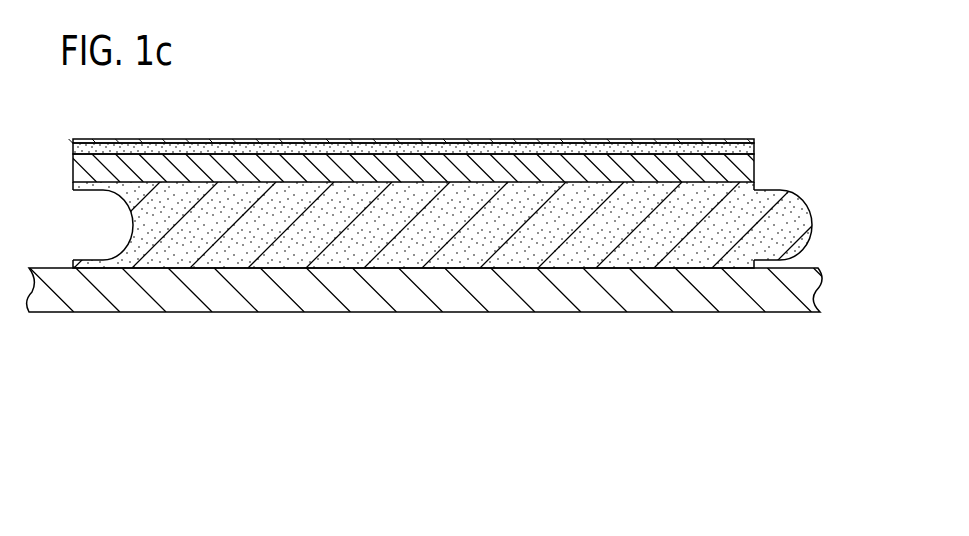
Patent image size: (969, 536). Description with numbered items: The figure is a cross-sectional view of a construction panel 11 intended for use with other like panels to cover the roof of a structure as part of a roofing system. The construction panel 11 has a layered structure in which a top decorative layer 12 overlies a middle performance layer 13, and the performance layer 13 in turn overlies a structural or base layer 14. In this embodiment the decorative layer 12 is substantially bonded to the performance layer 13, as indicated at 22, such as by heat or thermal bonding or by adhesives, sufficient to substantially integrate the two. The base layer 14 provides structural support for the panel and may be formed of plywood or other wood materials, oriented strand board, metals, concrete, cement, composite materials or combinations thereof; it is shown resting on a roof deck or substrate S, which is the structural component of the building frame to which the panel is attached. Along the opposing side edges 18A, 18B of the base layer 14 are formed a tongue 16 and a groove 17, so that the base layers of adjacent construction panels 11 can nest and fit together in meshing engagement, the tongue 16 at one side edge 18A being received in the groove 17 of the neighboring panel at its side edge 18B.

The construction panel 11 is at (693, 73).
The top decorative layer 12 is at (78, 144).
The bond between decorative layer and performance layer 22 is at (756, 143).
The middle performance layer 13 is at (78, 170).
The structural or base layer 14 is at (302, 247).
The tongue 16 is at (826, 195).
The groove 17 is at (78, 218).
The side edge 18A is at (808, 243).
The side edge 18B is at (120, 258).
The roof deck or substrate S is at (492, 295).